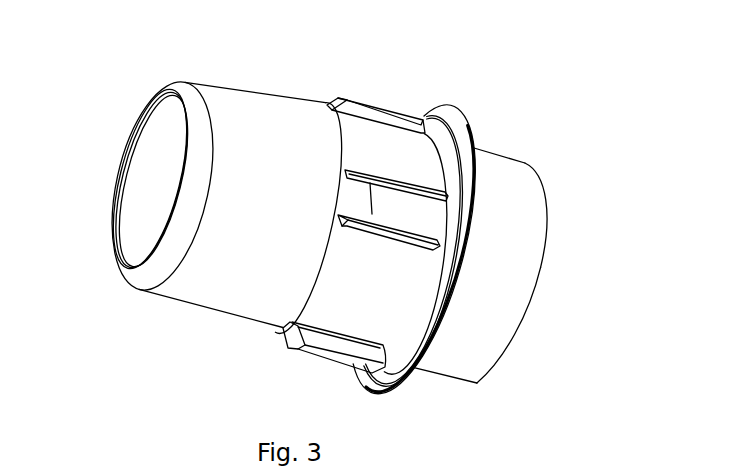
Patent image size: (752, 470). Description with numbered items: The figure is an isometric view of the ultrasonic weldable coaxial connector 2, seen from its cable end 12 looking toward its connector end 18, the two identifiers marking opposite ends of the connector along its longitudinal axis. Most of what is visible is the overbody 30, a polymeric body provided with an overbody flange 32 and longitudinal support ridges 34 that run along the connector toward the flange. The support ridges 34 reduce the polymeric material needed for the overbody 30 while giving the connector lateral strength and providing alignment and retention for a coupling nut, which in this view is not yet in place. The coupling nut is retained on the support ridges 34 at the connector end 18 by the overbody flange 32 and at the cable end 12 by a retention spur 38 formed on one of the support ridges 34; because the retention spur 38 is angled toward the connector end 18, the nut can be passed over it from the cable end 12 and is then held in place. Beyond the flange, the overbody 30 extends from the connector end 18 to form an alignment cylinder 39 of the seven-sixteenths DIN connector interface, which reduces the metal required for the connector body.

The coaxial connector 2 is at (285, 77).
The cable end 12 is at (105, 165).
The retention spur 38 is at (342, 93).
The longitudinal support ridges 34 is at (402, 205).
The overbody flange 32 is at (462, 115).
The overbody 30 is at (507, 155).
The alignment cylinder 39 is at (527, 212).
The connector end 18 is at (555, 295).